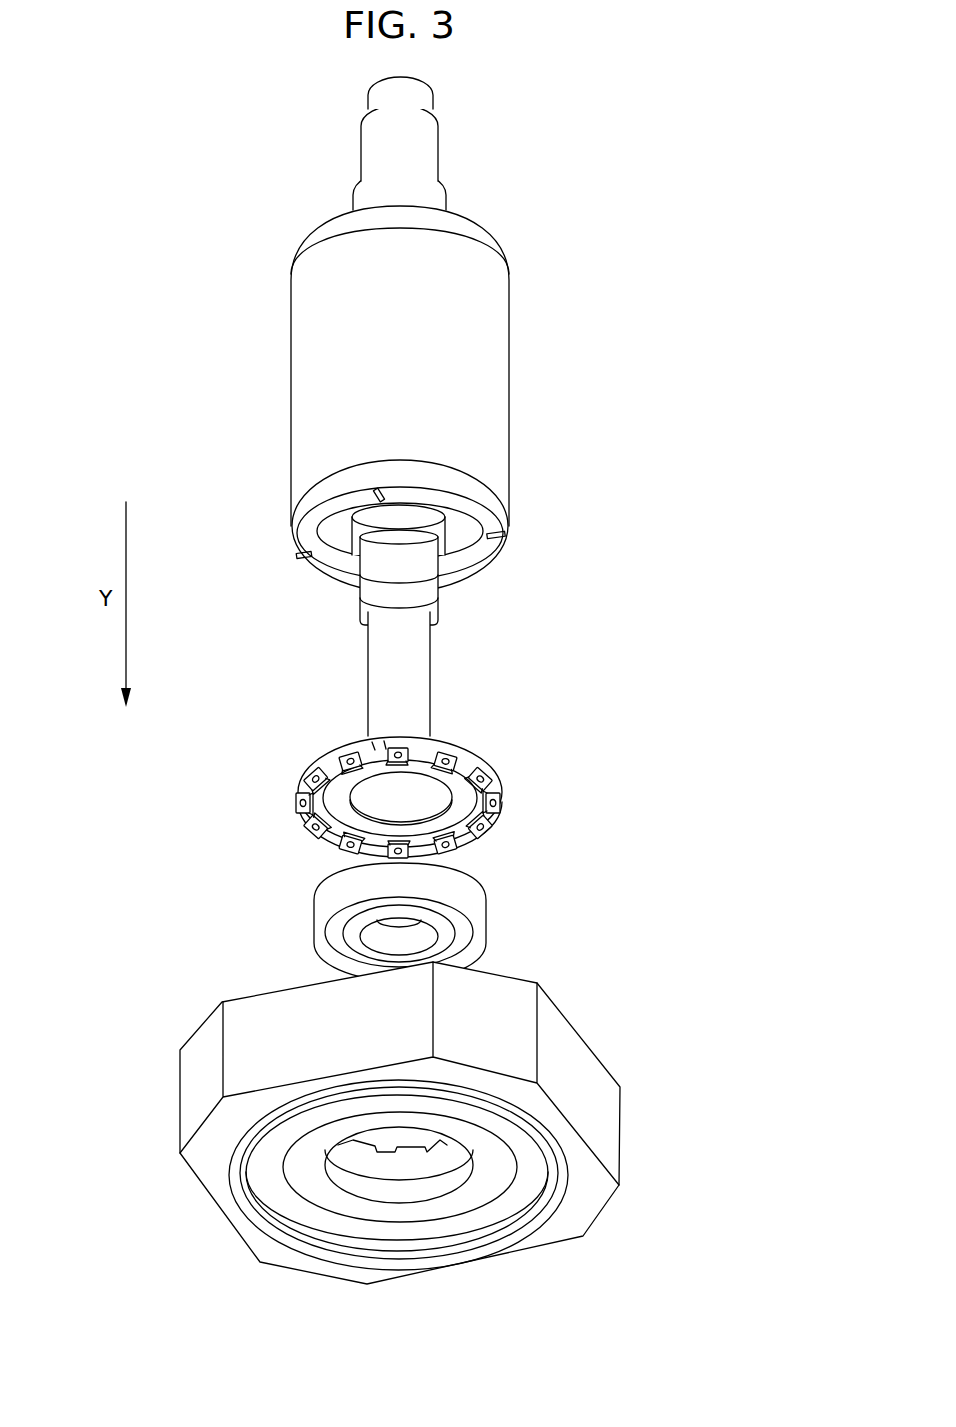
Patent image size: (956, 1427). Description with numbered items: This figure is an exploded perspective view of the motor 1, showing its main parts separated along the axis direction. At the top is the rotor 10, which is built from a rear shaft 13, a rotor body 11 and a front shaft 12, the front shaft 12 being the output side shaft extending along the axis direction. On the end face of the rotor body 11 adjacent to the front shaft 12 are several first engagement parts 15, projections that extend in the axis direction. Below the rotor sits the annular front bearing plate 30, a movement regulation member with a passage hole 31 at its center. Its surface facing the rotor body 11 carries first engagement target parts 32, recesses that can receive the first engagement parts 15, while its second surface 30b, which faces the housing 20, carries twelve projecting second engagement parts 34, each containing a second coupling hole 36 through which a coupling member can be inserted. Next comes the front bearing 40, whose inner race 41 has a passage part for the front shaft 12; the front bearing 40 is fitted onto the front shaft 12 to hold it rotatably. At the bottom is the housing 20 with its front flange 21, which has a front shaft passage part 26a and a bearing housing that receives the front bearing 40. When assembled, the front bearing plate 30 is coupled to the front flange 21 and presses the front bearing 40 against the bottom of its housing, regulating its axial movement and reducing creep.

The motor 1 is at (696, 113).
The rotor 10 is at (574, 350).
The rotor body 11 is at (512, 430).
The front shaft 12 is at (442, 667).
The rear shaft 13 is at (445, 156).
The first engagement parts 15 is at (374, 490).
The housing 20 is at (722, 1013).
The front flange 21 is at (645, 1086).
The front shaft passage part 26a is at (443, 1185).
The front bearing plate 30 is at (530, 770).
The second surface 30b is at (463, 798).
The passage hole 31 is at (417, 798).
The first engagement target parts 32 is at (378, 747).
The second engagement parts 34 is at (302, 774).
The second coupling holes 36 is at (455, 755).
The front bearing 40 is at (515, 907).
The inner race 41 is at (412, 937).